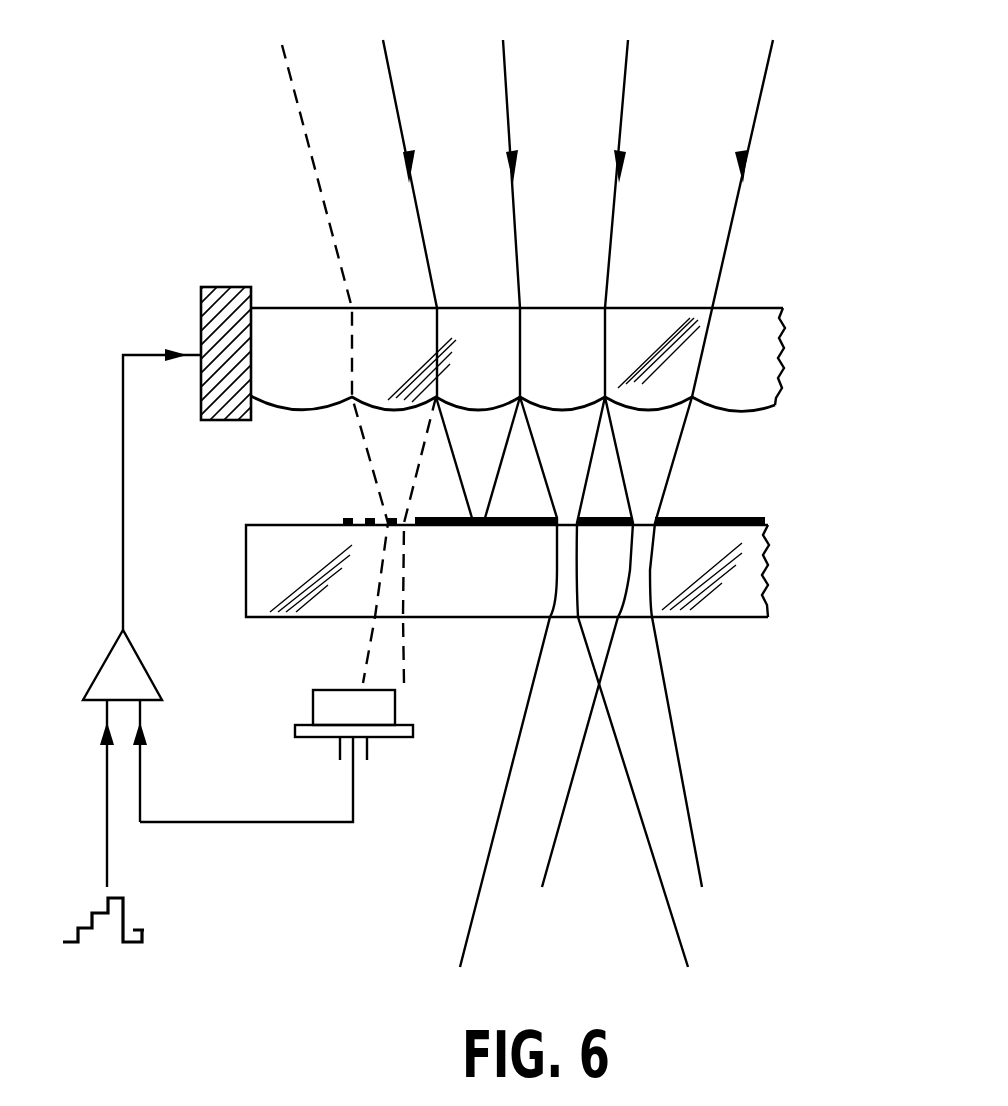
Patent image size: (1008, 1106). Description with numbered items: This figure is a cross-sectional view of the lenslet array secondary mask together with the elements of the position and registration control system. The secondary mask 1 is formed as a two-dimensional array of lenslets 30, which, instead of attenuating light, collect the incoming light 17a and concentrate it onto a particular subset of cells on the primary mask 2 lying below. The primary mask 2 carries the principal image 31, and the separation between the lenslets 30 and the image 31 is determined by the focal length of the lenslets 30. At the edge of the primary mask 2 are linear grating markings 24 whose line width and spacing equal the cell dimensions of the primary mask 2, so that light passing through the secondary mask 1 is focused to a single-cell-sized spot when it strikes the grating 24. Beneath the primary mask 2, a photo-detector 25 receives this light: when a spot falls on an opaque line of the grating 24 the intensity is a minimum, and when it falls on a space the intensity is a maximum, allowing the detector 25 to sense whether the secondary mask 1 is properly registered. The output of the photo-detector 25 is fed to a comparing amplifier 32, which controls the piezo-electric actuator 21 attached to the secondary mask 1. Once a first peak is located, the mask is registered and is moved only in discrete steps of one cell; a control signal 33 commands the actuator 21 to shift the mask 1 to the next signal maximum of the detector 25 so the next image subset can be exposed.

The secondary mask 1 is at (783, 333).
The primary mask 2 is at (777, 563).
The light 17a is at (728, 247).
The piezo-electric actuator 21 is at (228, 287).
The linear grating markings 24 is at (347, 518).
The photo-detector 25 is at (340, 690).
The lenslets 30 is at (737, 410).
The principal image 31 is at (718, 518).
The comparing amplifier 32 is at (162, 692).
The control signal 33 is at (107, 857).